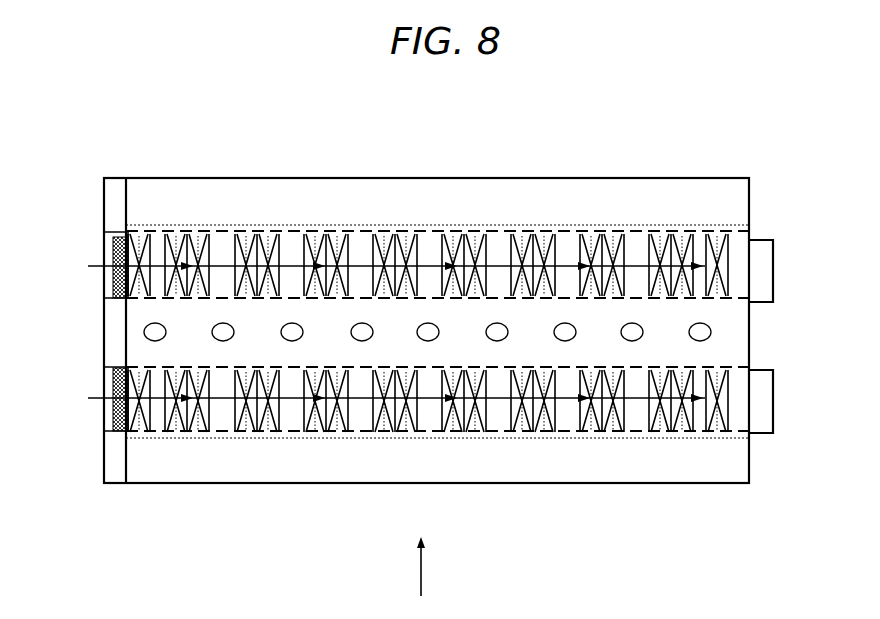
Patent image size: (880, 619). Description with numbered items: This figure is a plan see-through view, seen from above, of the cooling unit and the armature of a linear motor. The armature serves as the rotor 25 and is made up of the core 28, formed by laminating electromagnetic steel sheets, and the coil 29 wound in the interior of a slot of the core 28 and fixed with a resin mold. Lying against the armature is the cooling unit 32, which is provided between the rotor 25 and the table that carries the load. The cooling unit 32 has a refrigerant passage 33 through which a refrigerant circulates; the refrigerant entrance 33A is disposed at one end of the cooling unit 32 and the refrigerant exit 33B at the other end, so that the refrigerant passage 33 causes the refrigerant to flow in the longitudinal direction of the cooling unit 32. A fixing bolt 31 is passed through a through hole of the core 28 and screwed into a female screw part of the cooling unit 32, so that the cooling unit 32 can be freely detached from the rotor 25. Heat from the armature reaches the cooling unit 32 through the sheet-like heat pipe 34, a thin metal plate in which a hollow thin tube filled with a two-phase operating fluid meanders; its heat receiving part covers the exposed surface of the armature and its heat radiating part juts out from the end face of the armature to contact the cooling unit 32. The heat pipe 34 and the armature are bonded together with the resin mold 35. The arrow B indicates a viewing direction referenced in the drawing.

The rotor 25 is at (556, 484).
The core 28 is at (500, 248).
The coil 29 is at (262, 195).
The fixing bolt 31 is at (364, 325).
The cooling unit 32 is at (393, 483).
The refrigerant passage 33 is at (160, 236).
The refrigerant entrance 33A is at (112, 243).
The refrigerant exit 33B is at (762, 268).
The sheet-like heat pipe 34 is at (112, 280).
The resin mold 35 is at (112, 470).
The viewing direction arrow B is at (427, 566).